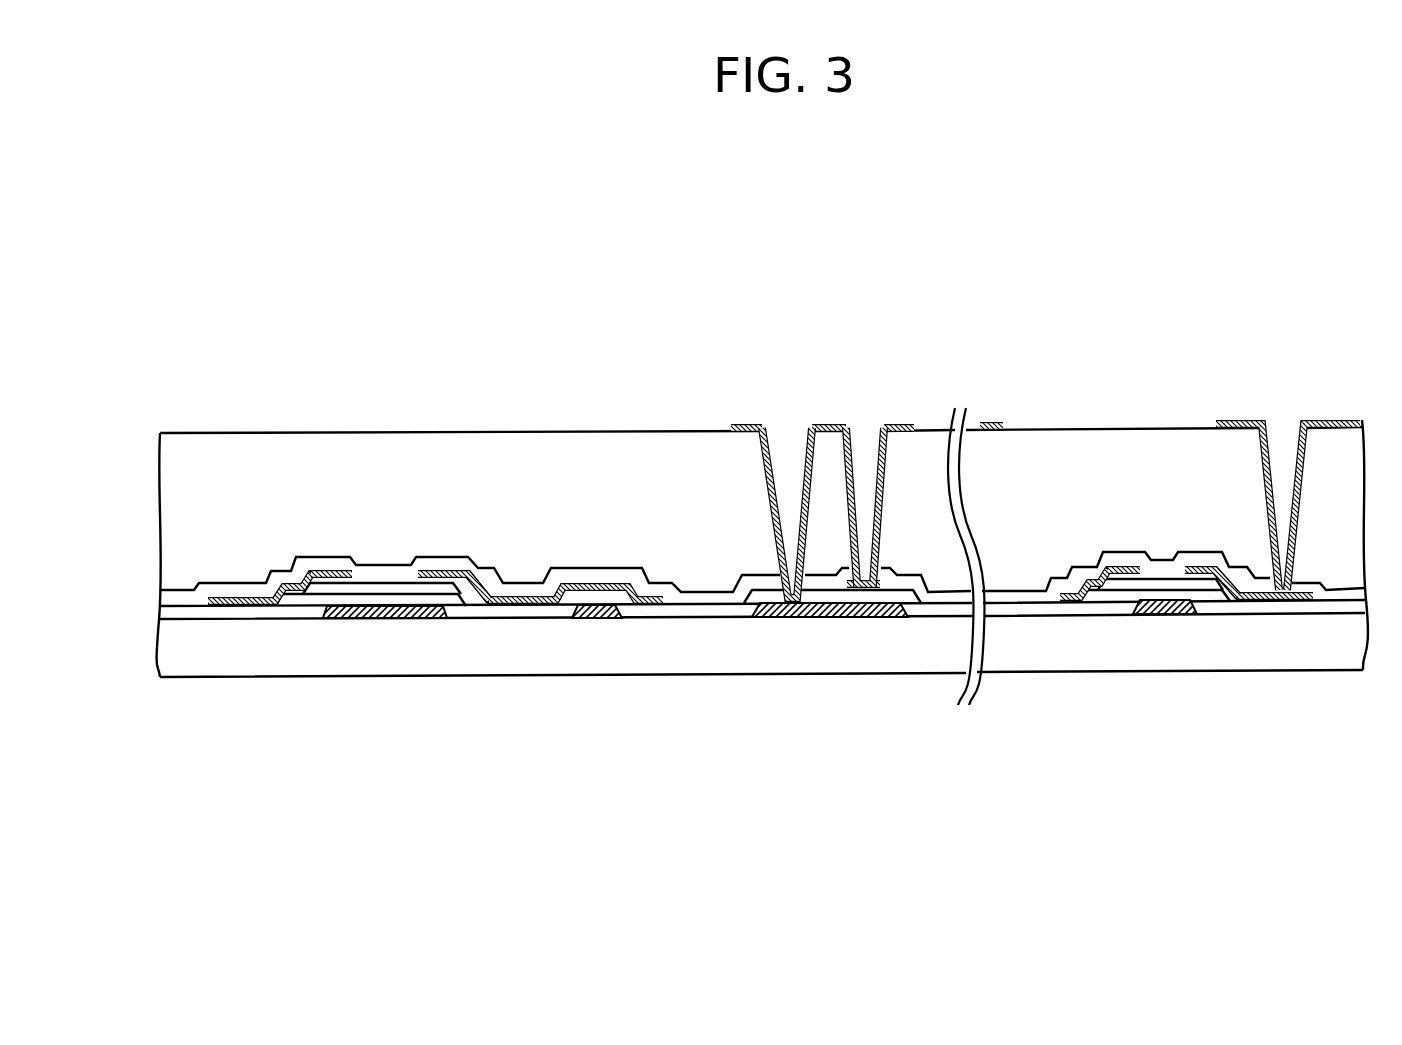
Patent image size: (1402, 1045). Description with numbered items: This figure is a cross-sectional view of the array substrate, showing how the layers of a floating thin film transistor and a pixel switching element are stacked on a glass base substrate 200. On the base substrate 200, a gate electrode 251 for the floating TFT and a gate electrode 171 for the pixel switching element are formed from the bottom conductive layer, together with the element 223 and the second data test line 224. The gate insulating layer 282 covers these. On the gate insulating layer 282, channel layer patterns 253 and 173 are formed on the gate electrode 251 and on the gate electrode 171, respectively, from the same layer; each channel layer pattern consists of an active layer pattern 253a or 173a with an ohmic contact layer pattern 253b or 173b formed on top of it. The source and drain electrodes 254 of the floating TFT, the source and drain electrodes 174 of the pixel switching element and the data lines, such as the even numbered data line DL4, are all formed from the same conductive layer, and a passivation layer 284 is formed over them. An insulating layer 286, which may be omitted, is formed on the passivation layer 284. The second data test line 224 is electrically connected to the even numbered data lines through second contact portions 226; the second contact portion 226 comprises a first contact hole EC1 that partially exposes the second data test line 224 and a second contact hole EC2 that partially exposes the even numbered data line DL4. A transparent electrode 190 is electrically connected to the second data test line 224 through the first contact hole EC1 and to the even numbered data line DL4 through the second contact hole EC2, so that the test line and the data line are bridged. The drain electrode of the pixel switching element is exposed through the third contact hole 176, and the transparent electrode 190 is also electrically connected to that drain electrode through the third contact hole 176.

The base substrate 200 is at (183, 660).
The gate insulating layer 282 is at (172, 610).
The passivation layer 284 is at (180, 597).
The insulating layer 286 is at (183, 494).
The gate electrode 251 is at (395, 619).
The storage electrode 223 is at (591, 619).
The second data test line 224 is at (827, 618).
The second contact portion 226 is at (812, 449).
The first contact hole EC1 is at (796, 474).
The second contact hole EC2 is at (873, 474).
The even numbered data line DL4 is at (867, 589).
The channel layer pattern 253 is at (353, 755).
The active layer pattern 253a is at (293, 599).
The ohmic contact layer pattern 253b is at (299, 598).
The source and drain electrodes 254 is at (452, 565).
The gate electrode 171 is at (1157, 615).
The channel layer pattern 173 is at (1305, 755).
The active layer pattern 173a is at (1233, 590).
The ohmic contact layer pattern 173b is at (1220, 592).
The source and drain electrodes 174 is at (1192, 567).
The third contact hole 176 is at (1288, 470).
The transparent electrode 190 is at (1340, 421).